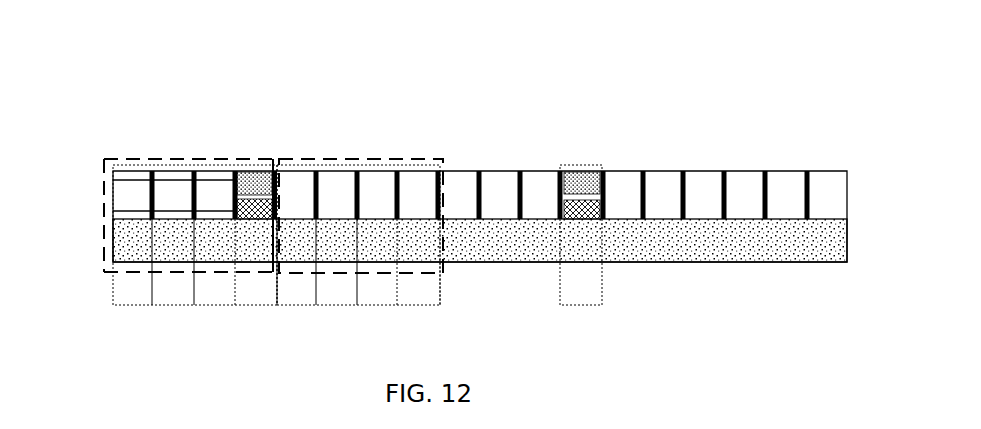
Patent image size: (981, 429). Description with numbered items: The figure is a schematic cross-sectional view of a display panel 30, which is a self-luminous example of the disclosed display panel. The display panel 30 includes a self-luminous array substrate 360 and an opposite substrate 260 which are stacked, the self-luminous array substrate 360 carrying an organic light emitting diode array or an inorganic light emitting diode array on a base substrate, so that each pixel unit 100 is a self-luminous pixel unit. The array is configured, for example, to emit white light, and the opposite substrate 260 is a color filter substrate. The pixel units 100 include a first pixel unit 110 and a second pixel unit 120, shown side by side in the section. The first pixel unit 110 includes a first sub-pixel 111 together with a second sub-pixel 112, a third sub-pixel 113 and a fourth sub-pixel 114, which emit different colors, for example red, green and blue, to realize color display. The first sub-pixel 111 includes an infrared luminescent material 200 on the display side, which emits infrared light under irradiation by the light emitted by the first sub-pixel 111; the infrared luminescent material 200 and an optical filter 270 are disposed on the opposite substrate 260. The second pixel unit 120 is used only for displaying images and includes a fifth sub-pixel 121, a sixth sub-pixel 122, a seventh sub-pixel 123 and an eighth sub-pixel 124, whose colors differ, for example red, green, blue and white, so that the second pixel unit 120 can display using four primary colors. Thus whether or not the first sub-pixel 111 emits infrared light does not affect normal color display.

The display panel 30 is at (912, 59).
The pixel unit 100 is at (473, 200).
The first pixel unit 110 is at (173, 159).
The second pixel unit 120 is at (367, 159).
The first sub-pixel 111 is at (421, 235).
The second sub-pixel 112 is at (133, 262).
The third sub-pixel 113 is at (175, 262).
The fourth sub-pixel 114 is at (216, 262).
The fifth sub-pixel 121 is at (299, 262).
The sixth sub-pixel 122 is at (340, 262).
The seventh sub-pixel 123 is at (380, 262).
The eighth sub-pixel 124 is at (421, 262).
The infrared luminescent material 200 is at (113, 180).
The optical filter 270 is at (113, 211).
The opposite substrate 260 is at (816, 199).
The self-luminous array substrate 360 is at (816, 239).